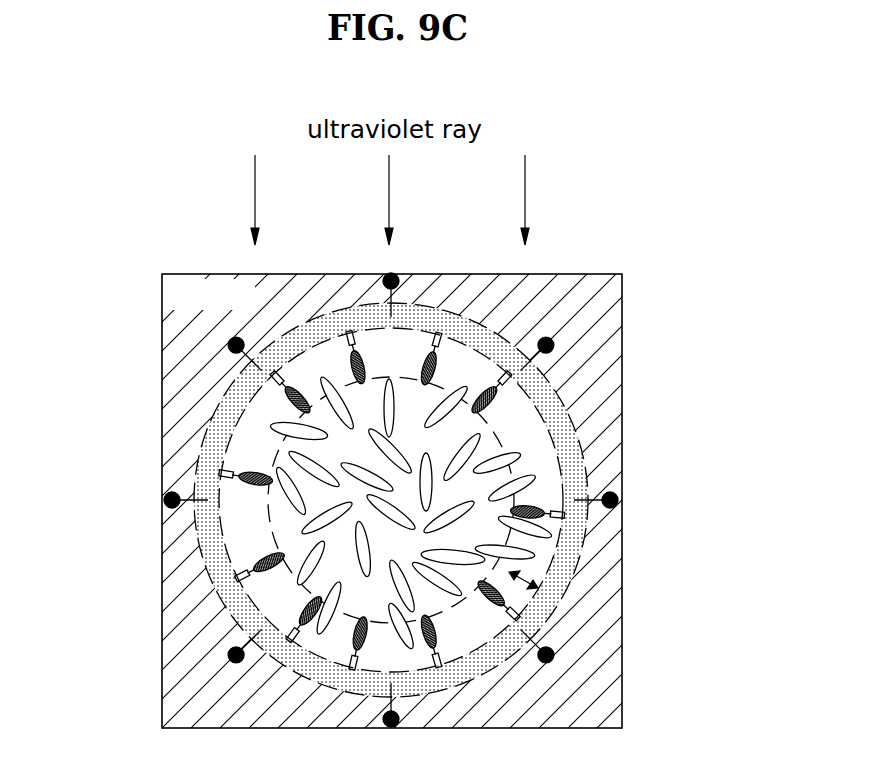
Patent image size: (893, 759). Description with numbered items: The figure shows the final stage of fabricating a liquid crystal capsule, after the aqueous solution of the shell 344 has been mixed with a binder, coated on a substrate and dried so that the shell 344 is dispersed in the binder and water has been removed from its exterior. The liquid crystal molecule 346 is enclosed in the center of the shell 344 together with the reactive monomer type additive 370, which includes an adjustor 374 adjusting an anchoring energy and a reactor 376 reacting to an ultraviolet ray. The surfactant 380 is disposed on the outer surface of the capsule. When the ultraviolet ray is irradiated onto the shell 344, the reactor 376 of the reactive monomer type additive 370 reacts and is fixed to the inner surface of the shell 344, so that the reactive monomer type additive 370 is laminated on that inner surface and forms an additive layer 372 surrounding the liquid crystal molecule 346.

The shell 344 is at (220, 582).
The liquid crystal molecule 346 is at (492, 436).
The reactive monomer type additive 370 is at (505, 500).
The additive layer 372 is at (513, 578).
The adjustor 374 is at (548, 498).
The reactor 376 is at (542, 517).
The surfactant 380 is at (552, 346).